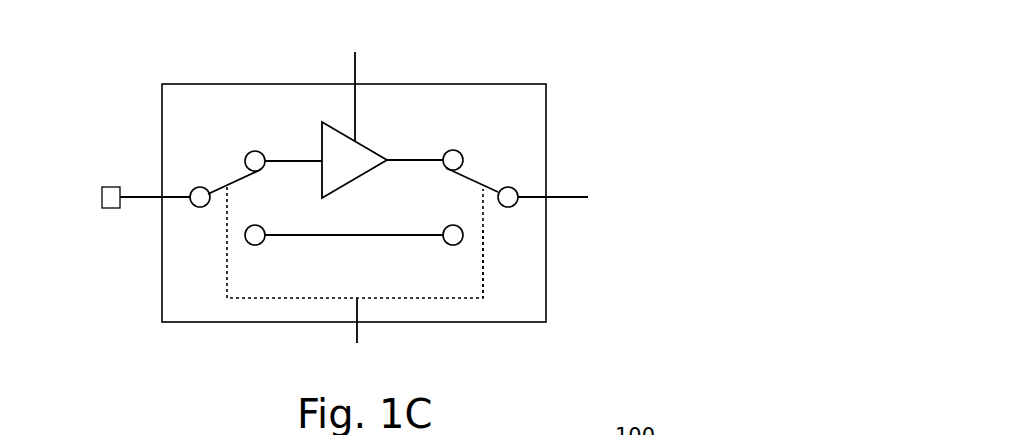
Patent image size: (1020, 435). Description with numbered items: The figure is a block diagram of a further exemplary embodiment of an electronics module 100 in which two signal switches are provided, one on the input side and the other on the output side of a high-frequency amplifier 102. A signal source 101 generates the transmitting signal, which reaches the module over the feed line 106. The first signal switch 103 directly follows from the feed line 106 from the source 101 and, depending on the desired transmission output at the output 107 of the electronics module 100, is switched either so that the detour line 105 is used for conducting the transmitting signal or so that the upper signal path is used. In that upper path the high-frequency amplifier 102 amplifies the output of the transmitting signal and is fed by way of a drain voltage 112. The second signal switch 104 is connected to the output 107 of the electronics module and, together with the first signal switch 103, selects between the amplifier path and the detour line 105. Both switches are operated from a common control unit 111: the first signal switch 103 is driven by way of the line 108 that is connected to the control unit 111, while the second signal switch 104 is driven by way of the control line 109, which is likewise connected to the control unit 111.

The electronics module 100 is at (556, 65).
The signal source 101 is at (110, 210).
The high-frequency amplifier 102 is at (363, 140).
The first signal switch 103 is at (223, 187).
The second signal switch 104 is at (488, 188).
The detour line 105 is at (420, 237).
The feed line 106 is at (140, 195).
The output 107 is at (568, 200).
The control line 108 is at (257, 298).
The control line 109 is at (484, 253).
The control unit 111 is at (360, 308).
The drain voltage 112 is at (355, 117).